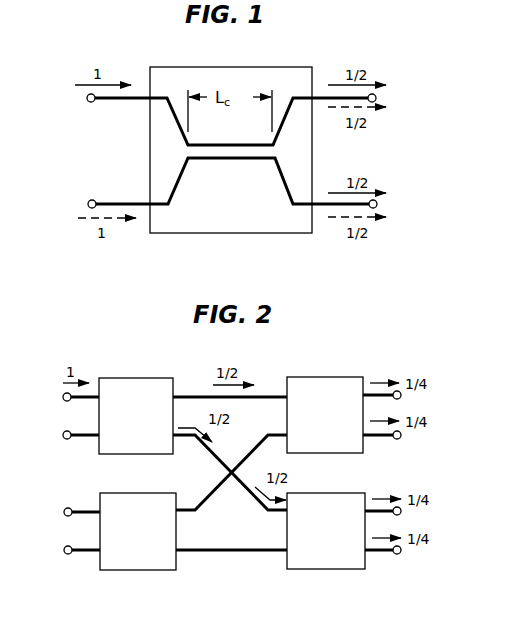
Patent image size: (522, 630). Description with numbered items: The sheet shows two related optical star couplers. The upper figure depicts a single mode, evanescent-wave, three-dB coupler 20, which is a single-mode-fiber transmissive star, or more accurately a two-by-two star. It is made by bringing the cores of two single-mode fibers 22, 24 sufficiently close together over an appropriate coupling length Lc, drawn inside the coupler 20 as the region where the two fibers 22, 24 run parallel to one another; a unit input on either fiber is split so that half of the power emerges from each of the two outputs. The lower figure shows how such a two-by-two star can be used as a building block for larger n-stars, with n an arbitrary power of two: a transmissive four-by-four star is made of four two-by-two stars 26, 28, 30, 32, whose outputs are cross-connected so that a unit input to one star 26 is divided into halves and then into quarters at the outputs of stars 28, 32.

In FIG. 1, the 3-dB coupler 20 is at (268, 67).
In FIG. 1, the single-mode fiber 22 is at (321, 95).
In FIG. 1, the single-mode fiber 24 is at (322, 200).
In FIG. 2, the 2×2 star 26 is at (138, 378).
In FIG. 2, the 2×2 star 28 is at (325, 377).
In FIG. 2, the 2×2 star 30 is at (135, 570).
In FIG. 2, the 2×2 star 32 is at (340, 569).